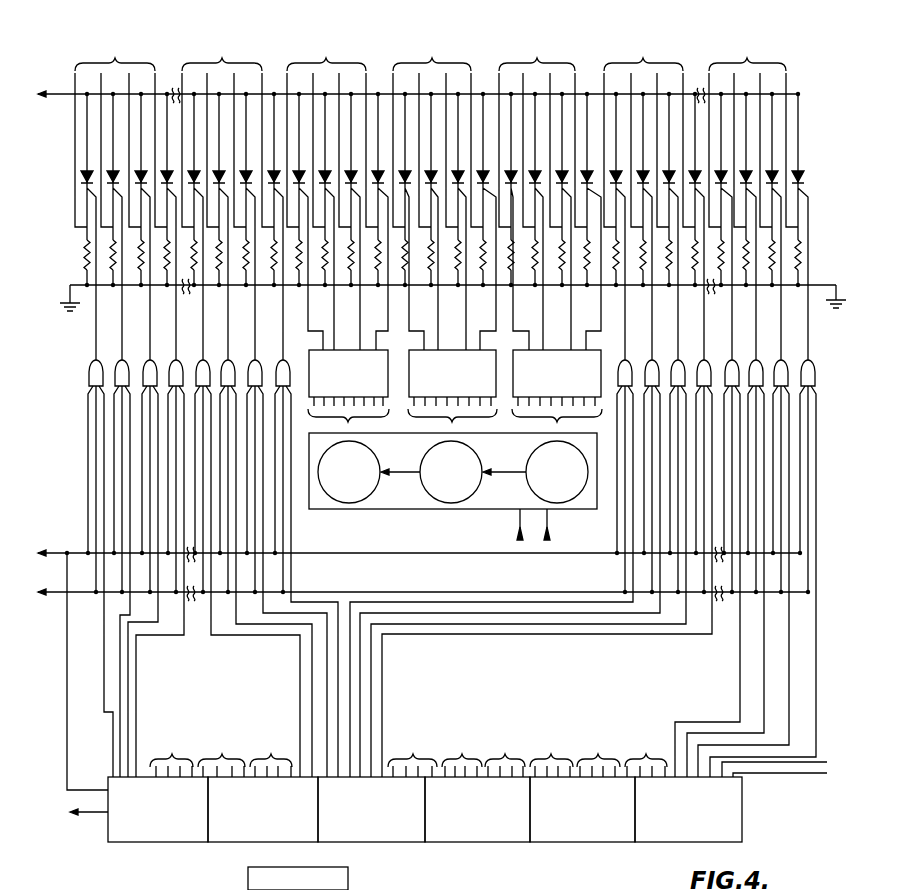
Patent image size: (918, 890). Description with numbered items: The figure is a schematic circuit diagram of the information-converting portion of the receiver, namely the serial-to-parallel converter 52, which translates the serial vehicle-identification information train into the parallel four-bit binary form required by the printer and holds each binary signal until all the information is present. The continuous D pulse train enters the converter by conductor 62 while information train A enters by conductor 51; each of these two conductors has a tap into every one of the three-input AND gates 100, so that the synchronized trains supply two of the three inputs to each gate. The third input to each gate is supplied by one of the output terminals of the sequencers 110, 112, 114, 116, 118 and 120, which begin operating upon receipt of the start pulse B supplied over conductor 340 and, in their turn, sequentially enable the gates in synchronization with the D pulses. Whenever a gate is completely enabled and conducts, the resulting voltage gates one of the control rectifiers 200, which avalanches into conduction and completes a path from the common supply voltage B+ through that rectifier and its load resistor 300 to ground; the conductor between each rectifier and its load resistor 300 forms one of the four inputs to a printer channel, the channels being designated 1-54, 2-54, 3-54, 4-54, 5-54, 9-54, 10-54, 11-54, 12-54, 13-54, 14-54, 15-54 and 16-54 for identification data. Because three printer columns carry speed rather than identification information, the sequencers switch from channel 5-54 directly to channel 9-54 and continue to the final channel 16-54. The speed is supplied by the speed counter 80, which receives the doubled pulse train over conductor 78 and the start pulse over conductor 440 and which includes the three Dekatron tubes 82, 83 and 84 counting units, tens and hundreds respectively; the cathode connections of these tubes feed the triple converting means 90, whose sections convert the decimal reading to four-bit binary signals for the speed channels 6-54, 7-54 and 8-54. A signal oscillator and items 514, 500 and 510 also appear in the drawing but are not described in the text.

The serial-to-parallel converter 52 is at (54, 92).
The control rectifiers 200 is at (70, 178).
The load resistors 300 is at (80, 263).
The three-input AND gates 100 is at (84, 363).
The converting means 90 is at (381, 354).
The speed counter 80 is at (453, 489).
The Dekatron tube 84 is at (375, 459).
The Dekatron tube 83 is at (477, 459).
The Dekatron tube 82 is at (530, 490).
The conductor 440 is at (518, 538).
The conductor 78 is at (549, 537).
The conductor 62 is at (68, 545).
The conductor 51 is at (58, 594).
The sequencer 110 is at (146, 831).
The sequencer 112 is at (240, 831).
The sequencer 114 is at (373, 831).
The sequencer 116 is at (470, 831).
The sequencer 118 is at (578, 831).
The sequencer 120 is at (697, 831).
The conductor 340 is at (82, 820).
The signal oscillator 514 is at (349, 881).
The line 500 is at (436, 886).
The line 510 is at (583, 889).
The printer channel 1-54 is at (115, 54).
The printer channel 2-54 is at (171, 760).
The printer channel 3-54 is at (221, 760).
The printer channel 4-54 is at (271, 760).
The printer channel 5-54 is at (222, 54).
The printer channel 6-54 is at (326, 54).
The printer channel 7-54 is at (432, 54).
The printer channel 8-54 is at (537, 54).
The printer channel 9-54 is at (643, 54).
The printer channel 10-54 is at (412, 760).
The printer channel 11-54 is at (462, 760).
The printer channel 12-54 is at (505, 760).
The printer channel 13-54 is at (551, 760).
The printer channel 14-54 is at (598, 760).
The printer channel 15-54 is at (646, 760).
The printer channel 16-54 is at (747, 54).